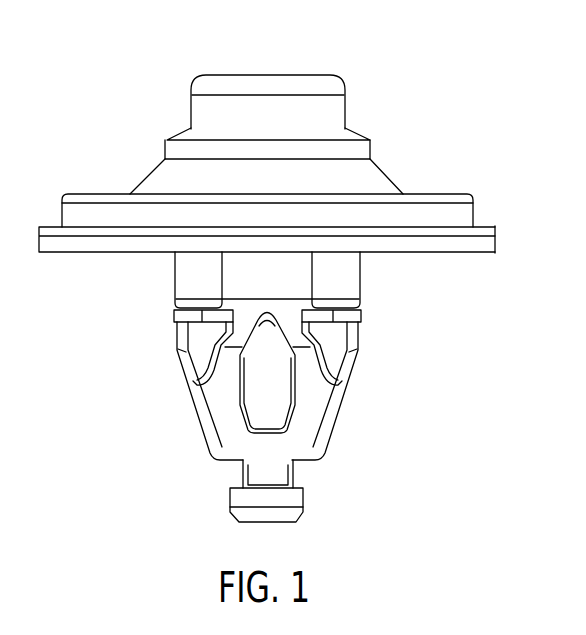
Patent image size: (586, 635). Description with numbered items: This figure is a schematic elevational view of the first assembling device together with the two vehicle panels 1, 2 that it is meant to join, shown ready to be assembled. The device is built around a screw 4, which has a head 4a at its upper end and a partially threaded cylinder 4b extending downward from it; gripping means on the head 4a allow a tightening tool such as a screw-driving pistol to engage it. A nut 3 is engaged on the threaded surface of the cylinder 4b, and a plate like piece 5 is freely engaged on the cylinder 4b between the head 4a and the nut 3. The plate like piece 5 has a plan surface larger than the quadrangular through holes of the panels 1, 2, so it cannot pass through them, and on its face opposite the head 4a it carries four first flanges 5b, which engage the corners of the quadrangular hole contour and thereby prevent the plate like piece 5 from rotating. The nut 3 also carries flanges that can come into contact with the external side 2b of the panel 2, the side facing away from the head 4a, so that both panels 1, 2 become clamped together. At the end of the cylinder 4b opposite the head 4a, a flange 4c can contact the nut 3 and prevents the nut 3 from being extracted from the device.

The panel 1 is at (55, 255).
The panel 2 is at (55, 223).
The external side 2b is at (487, 225).
The nut 3 is at (207, 451).
The screw 4 is at (312, 72).
The head 4a is at (327, 112).
The partially threaded cylinder 4b is at (277, 393).
The flange 4c is at (298, 498).
The plate like piece 5 is at (402, 177).
The first flanges 5b is at (187, 278).